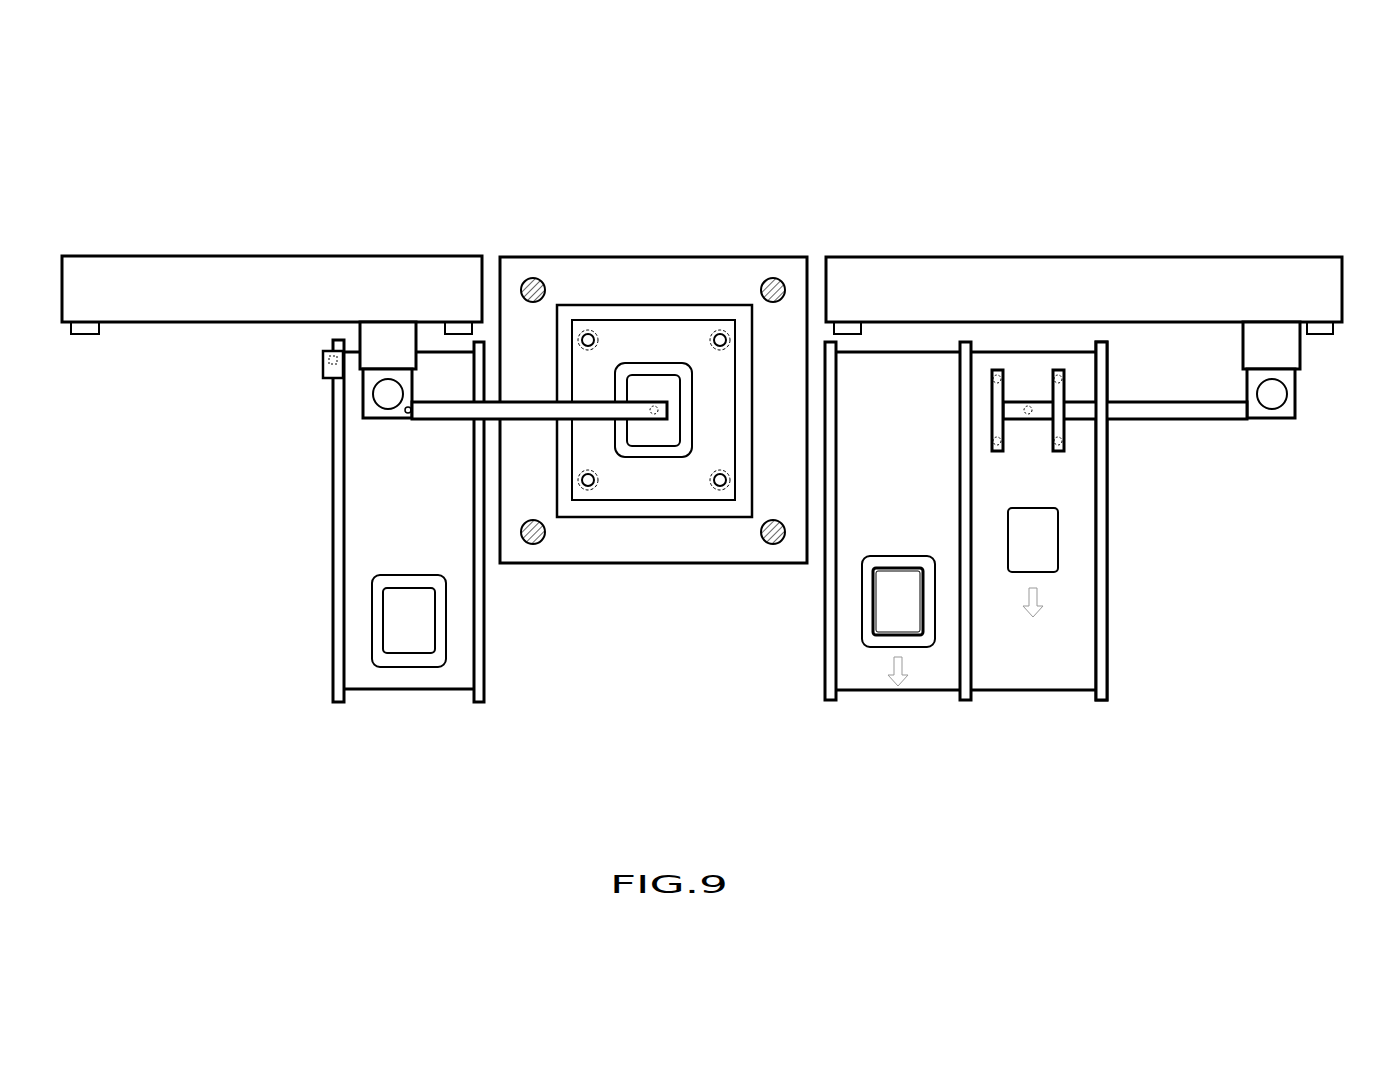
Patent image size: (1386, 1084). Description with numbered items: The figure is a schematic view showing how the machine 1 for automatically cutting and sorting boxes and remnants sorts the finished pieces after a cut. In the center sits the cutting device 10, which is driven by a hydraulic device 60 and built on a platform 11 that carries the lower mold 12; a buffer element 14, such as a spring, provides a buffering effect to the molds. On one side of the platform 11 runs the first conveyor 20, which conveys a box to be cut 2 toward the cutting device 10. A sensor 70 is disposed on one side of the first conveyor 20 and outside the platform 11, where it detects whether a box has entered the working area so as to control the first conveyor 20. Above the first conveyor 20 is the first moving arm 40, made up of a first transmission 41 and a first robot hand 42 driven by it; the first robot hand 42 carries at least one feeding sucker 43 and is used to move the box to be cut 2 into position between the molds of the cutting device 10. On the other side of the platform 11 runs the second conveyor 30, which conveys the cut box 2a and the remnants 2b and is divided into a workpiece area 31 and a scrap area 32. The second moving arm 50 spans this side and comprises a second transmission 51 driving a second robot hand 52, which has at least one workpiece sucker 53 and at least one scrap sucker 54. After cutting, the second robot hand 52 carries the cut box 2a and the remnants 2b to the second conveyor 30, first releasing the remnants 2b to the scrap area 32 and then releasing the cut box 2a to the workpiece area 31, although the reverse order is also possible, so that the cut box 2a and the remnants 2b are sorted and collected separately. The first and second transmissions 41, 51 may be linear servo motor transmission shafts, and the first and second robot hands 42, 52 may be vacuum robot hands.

The machine 1 is at (446, 125).
The cutting device 10 is at (663, 393).
The platform 11 is at (618, 547).
The lower mold 12 is at (655, 435).
The buffer element 14 is at (720, 480).
The first conveyor 20 is at (393, 521).
The box to be cut 2 is at (423, 613).
The cut box 2a is at (1043, 567).
The remnants 2b is at (864, 605).
The second conveyor 30 is at (1003, 558).
The workpiece area 31 is at (1023, 673).
The scrap area 32 is at (874, 673).
The first moving arm 40 is at (364, 271).
The first transmission 41 is at (194, 277).
The first robot hand 42 is at (524, 412).
The feeding sucker 43 is at (654, 410).
The second moving arm 50 is at (1084, 414).
The second transmission 51 is at (1033, 270).
The second robot hand 52 is at (1183, 410).
The workpiece sucker 53 is at (1028, 412).
The scrap sucker 54 is at (1058, 442).
The hydraulic device 60 is at (765, 285).
The sensor 70 is at (323, 360).